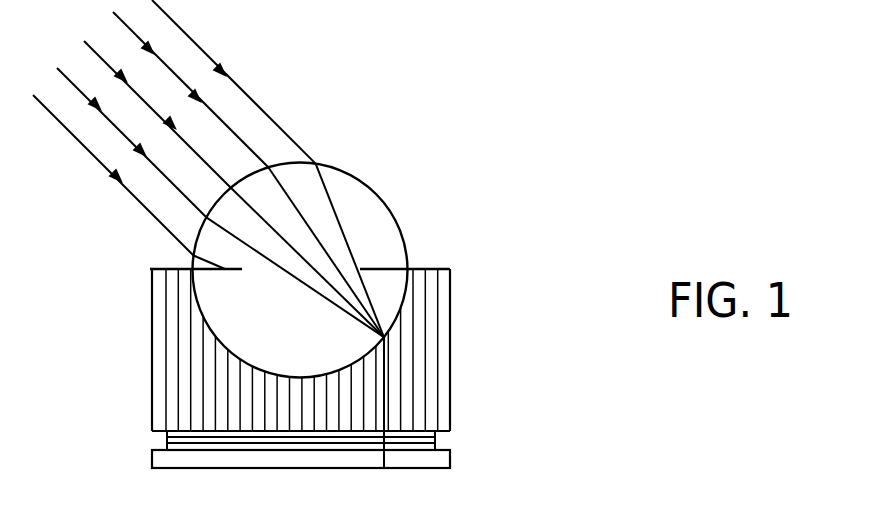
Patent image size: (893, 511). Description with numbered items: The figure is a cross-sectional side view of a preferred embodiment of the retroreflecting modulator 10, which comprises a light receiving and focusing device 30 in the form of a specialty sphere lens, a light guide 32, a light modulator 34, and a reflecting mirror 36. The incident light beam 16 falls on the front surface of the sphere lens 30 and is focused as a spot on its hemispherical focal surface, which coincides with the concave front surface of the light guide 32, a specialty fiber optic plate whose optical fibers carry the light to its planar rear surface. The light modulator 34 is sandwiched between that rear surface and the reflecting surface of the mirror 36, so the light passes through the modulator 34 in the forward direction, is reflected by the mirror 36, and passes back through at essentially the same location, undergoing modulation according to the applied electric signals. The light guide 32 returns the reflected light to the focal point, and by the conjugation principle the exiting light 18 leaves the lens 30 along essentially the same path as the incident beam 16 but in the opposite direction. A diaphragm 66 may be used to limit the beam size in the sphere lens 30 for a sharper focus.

The retroreflecting modulator 10 is at (552, 190).
The incident light beam 16 is at (200, 101).
The exiting light 18 is at (153, 47).
The light receiving and focusing device 30 is at (375, 176).
The light guide 32 is at (450, 343).
The light modulator 34 is at (435, 444).
The reflecting mirror 36 is at (403, 468).
The diaphragm 66 is at (205, 271).